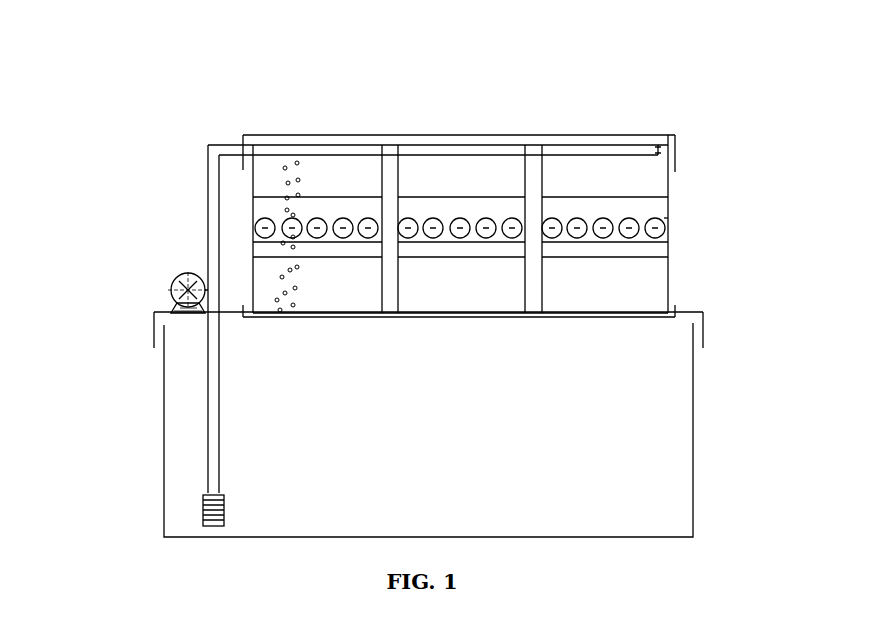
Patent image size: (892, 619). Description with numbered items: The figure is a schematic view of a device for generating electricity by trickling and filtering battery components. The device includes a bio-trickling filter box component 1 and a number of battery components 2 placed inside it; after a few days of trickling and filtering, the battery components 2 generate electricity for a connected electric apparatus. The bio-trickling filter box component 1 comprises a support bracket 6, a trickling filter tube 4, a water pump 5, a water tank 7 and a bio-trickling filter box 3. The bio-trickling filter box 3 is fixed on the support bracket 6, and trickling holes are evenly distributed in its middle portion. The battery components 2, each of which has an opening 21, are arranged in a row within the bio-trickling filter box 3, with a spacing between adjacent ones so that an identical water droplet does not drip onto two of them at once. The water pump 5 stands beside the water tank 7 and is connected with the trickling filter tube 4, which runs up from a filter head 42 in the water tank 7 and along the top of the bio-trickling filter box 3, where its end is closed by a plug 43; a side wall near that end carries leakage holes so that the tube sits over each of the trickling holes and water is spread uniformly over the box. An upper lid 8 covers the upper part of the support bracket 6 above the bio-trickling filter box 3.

The bio-trickling filter box component 1 is at (230, 233).
The battery component 2 is at (625, 220).
The opening 21 is at (668, 218).
The bio-trickling filter box 3 is at (643, 257).
The trickling filter tube 4 is at (240, 145).
The filter head 42 is at (202, 505).
The plug 43 is at (673, 136).
The water pump 5 is at (180, 278).
The support bracket 6 is at (157, 313).
The water tank 7 is at (188, 422).
The upper lid 8 is at (618, 135).